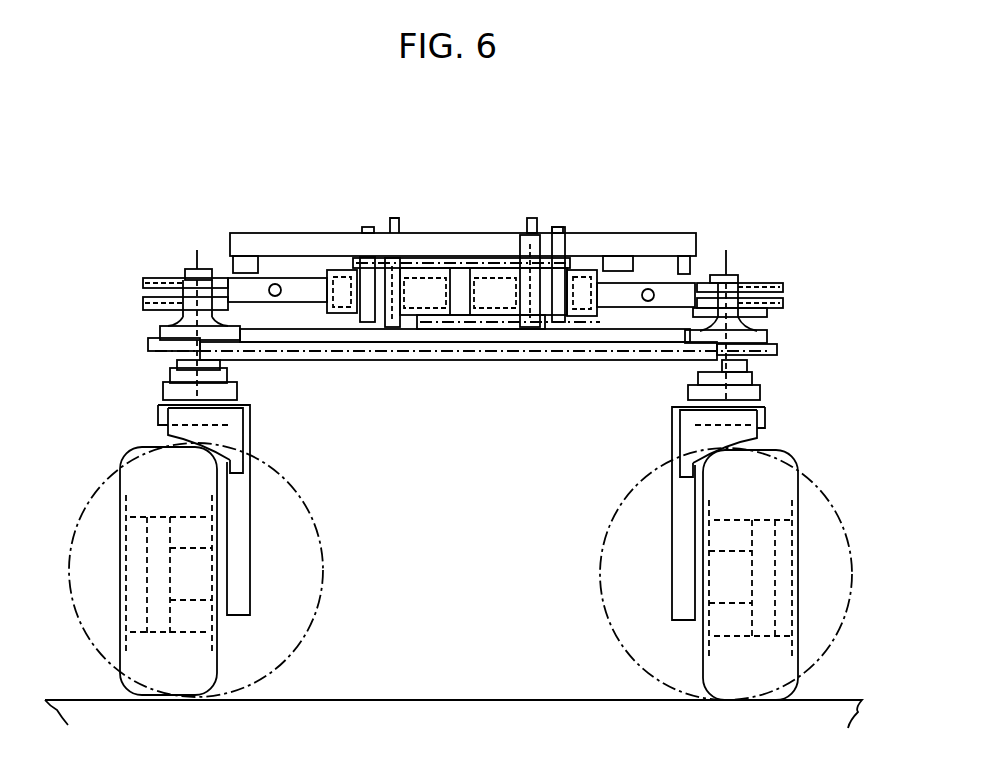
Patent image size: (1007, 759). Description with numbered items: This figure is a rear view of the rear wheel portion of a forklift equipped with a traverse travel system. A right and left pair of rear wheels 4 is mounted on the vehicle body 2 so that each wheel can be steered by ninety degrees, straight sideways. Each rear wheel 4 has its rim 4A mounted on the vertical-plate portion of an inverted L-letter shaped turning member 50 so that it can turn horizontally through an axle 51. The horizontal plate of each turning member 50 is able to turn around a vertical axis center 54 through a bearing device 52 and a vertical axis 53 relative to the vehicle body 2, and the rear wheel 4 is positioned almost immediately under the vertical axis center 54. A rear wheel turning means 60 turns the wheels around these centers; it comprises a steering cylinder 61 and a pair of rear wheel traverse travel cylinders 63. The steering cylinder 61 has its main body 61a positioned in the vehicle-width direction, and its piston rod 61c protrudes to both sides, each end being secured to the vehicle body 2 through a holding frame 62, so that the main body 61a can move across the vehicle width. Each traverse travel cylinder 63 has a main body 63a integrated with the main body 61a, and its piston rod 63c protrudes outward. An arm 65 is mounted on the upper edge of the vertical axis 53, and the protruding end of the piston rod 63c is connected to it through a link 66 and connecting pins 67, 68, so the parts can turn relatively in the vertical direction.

The vehicle body 2 is at (392, 360).
The rear wheel 4 is at (148, 668).
The rim 4A is at (132, 567).
The turning member 50 is at (237, 508).
The axle 51 is at (187, 613).
The bearing device 52 is at (150, 365).
The vertical axis 53 is at (162, 332).
The vertical axis center 54 is at (237, 397).
The rear wheel turning means 60 is at (755, 216).
The steering cylinder 61 is at (460, 249).
The main body 61a is at (483, 268).
The piston rod 61c is at (615, 270).
The holding frame 62 is at (280, 233).
The rear wheel traverse travel cylinder 63 is at (426, 249).
The main body 63a is at (487, 305).
The piston rod 63c is at (322, 297).
The arm 65 is at (180, 316).
The link 66 is at (172, 277).
The connecting pin 67 is at (140, 288).
The connecting pin 68 is at (226, 278).